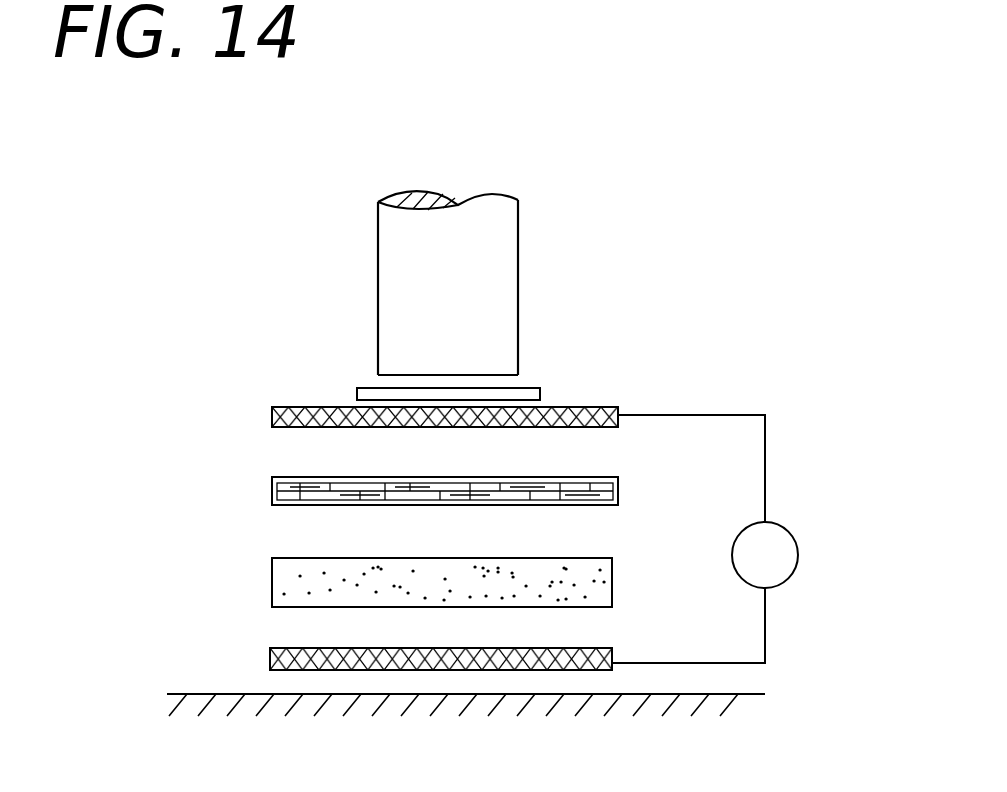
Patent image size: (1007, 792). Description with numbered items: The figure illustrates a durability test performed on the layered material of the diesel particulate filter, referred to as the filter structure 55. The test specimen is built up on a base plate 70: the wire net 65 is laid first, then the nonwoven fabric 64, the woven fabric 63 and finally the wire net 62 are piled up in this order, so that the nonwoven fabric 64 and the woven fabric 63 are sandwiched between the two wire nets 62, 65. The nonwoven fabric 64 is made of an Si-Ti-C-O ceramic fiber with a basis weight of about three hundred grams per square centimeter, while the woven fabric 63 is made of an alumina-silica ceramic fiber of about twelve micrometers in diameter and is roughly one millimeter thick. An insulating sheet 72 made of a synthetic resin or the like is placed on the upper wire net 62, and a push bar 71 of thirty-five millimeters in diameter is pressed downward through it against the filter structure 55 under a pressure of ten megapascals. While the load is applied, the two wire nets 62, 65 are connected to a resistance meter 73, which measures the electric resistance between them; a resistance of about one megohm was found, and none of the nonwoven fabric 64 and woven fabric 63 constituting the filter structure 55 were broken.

The filter structure 55 is at (260, 416).
The wire net 62 is at (594, 427).
The woven fabric 63 is at (618, 497).
The nonwoven fabric 64 is at (583, 588).
The wire net 65 is at (588, 652).
The base plate 70 is at (245, 694).
The push bar 71 is at (408, 298).
The insulating sheet 72 is at (536, 389).
The resistance meter 73 is at (783, 551).